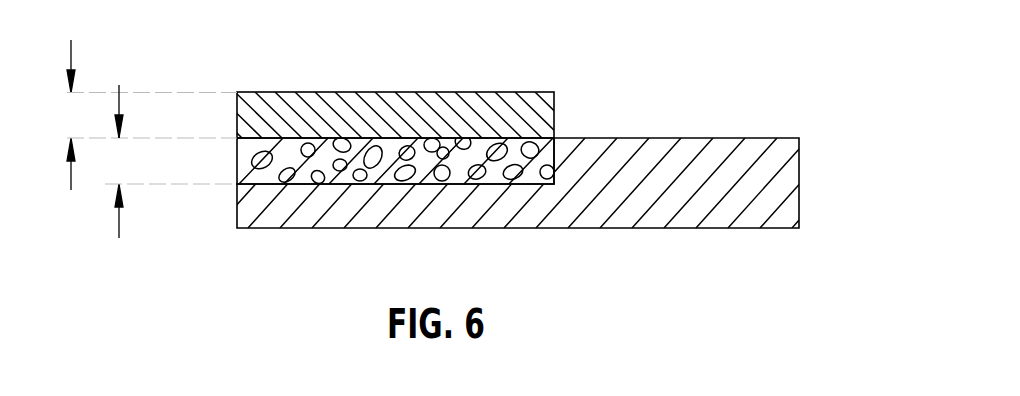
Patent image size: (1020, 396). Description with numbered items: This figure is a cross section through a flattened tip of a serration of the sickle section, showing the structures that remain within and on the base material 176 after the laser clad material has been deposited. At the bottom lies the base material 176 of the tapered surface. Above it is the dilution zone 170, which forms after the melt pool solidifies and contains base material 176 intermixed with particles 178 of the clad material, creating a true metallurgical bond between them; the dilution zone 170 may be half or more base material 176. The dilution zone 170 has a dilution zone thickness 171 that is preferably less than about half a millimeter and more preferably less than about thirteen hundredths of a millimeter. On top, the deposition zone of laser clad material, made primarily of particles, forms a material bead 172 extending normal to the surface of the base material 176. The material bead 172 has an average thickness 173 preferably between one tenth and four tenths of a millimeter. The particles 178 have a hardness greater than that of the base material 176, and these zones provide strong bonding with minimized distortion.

The dilution zone 170 is at (242, 152).
The dilution zone thickness 171 is at (119, 228).
The material bead 172 is at (550, 98).
The average thickness 173 is at (71, 180).
The base material 176 is at (263, 210).
The particles 178 is at (436, 145).